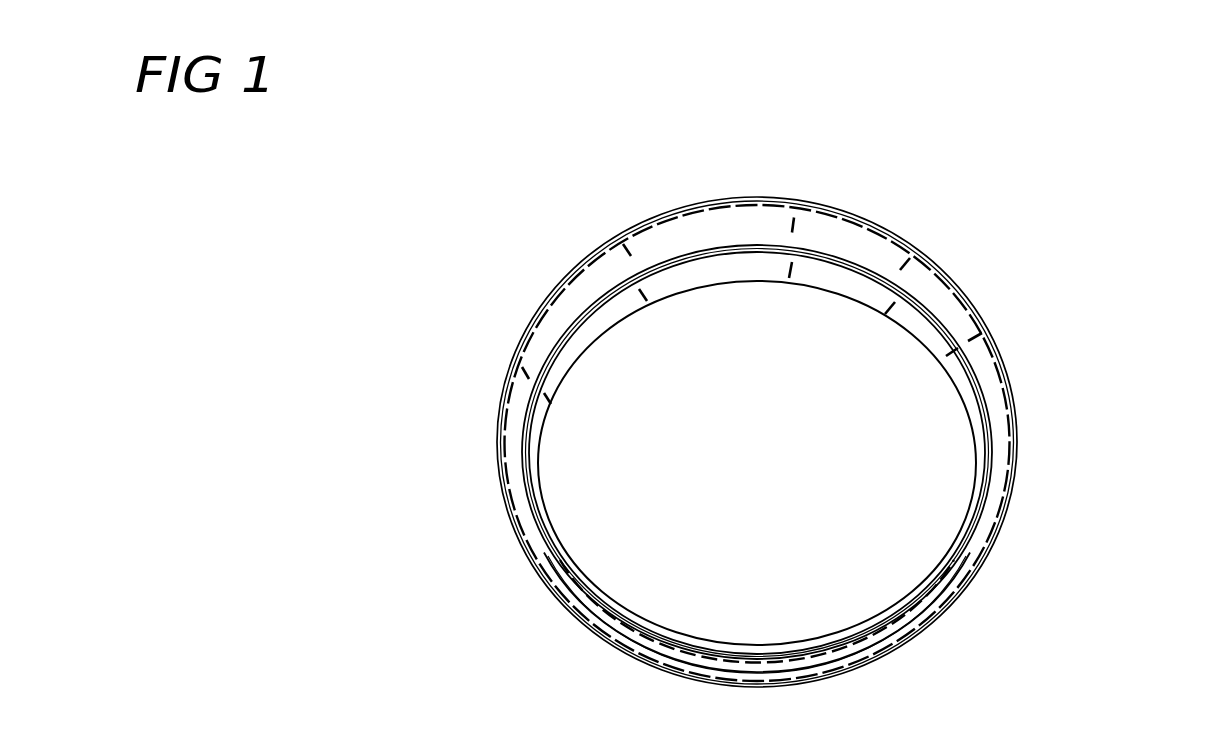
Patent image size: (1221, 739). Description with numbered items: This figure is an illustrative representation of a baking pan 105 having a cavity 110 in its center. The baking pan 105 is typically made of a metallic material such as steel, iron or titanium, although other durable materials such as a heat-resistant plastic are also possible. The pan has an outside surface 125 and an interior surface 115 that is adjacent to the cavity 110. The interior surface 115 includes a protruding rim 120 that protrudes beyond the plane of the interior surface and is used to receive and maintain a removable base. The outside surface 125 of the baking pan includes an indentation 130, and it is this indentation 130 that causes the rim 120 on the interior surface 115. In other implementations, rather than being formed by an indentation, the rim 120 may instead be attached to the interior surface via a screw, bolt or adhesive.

The baking pan 105 is at (966, 205).
The cavity 110 is at (757, 463).
The interior surface 115 is at (573, 292).
The protruding rim 120 is at (690, 256).
The outside surface 125 is at (662, 651).
The indentation 130 is at (858, 638).